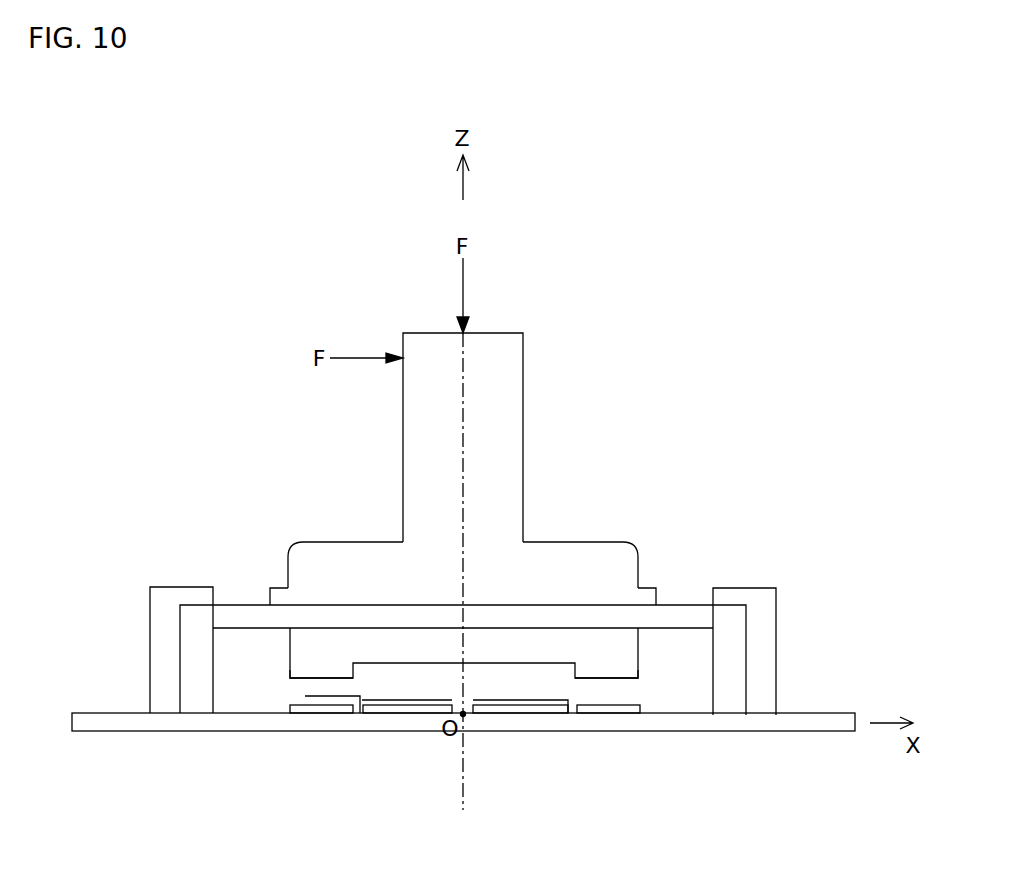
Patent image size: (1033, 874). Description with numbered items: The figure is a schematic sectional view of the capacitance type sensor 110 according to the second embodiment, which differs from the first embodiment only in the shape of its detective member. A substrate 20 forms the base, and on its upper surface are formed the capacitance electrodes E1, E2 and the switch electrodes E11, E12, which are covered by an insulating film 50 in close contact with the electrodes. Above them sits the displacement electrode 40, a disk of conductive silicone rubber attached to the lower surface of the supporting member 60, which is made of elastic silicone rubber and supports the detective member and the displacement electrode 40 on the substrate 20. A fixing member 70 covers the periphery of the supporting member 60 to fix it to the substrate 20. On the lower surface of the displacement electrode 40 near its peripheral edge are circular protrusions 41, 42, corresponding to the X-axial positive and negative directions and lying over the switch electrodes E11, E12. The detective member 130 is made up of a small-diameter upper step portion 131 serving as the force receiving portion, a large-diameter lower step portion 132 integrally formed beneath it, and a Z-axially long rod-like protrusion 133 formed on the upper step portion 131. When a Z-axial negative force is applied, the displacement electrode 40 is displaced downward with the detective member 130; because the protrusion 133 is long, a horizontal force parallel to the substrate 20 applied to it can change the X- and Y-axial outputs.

The capacitance type sensor 110 is at (672, 326).
The detective member 130 is at (150, 444).
The upper step portion 131 is at (305, 560).
The lower step portion 132 is at (272, 593).
The protrusion 133 is at (423, 497).
The fixing member 70 is at (763, 605).
The supporting member 60 is at (227, 617).
The displacement electrode 40 is at (303, 655).
The protrusion 41 is at (607, 672).
The protrusion 42 is at (320, 670).
The insulating film 50 is at (305, 697).
The substrate 20 is at (125, 722).
The capacitance electrode E1 is at (520, 712).
The capacitance electrode E2 is at (405, 714).
The switch electrode E11 is at (607, 712).
The switch electrode E12 is at (320, 712).